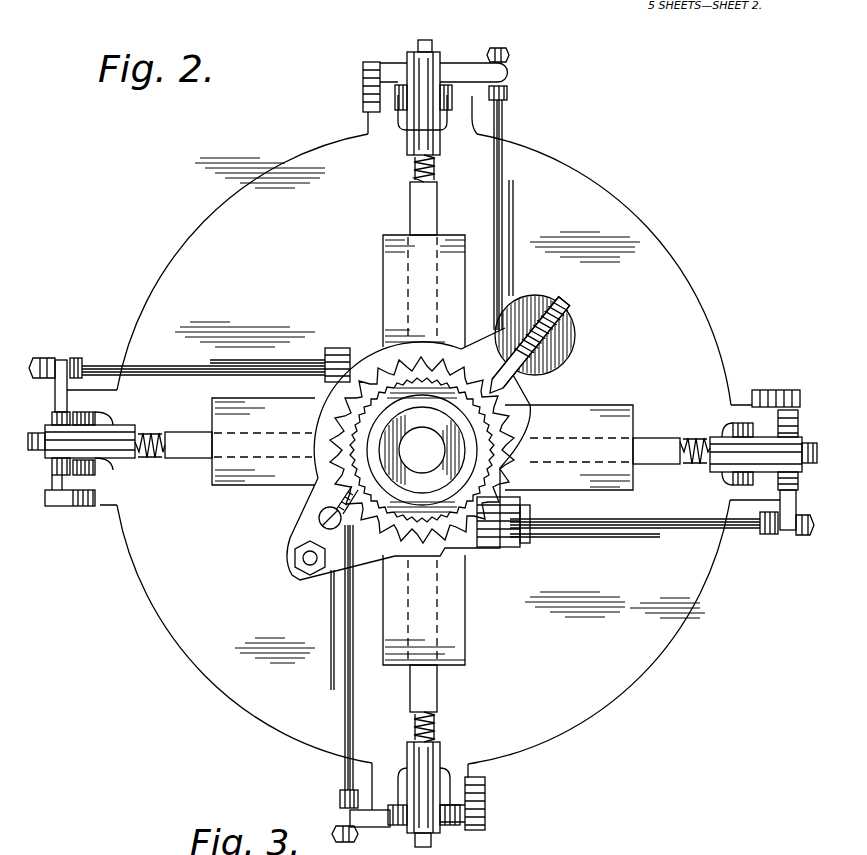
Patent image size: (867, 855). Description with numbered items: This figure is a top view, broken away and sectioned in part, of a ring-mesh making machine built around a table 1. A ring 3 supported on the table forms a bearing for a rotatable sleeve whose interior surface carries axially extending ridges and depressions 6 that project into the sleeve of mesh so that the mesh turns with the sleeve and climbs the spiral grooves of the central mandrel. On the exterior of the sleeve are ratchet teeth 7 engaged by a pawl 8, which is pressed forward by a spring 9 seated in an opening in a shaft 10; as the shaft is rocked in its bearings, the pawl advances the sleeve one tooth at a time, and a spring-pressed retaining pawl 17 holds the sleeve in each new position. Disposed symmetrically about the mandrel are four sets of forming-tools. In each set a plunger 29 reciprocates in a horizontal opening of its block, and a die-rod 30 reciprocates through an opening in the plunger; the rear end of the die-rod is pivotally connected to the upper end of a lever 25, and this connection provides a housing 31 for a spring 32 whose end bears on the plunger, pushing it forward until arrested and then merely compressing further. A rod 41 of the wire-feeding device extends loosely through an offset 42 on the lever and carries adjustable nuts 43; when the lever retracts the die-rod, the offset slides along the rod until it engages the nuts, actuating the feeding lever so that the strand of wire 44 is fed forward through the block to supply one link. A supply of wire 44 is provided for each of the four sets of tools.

The table 1 is at (423, 453).
The ring 3 is at (425, 556).
The ridges and depressions 6 is at (370, 432).
The ratchet teeth 7 is at (378, 362).
The pawl 8 is at (520, 393).
The spring 9 is at (545, 338).
The shaft 10 is at (568, 322).
The retaining pawl 17 is at (343, 528).
The lever 25 is at (432, 76).
The plunger 29 is at (437, 212).
The die-rod 30 is at (436, 168).
The housing 31 is at (430, 138).
The spring 32 is at (414, 168).
The rod 41 is at (503, 192).
The offset 42 is at (505, 80).
The adjustable nuts 43 is at (508, 62).
The wire 44 is at (514, 278).